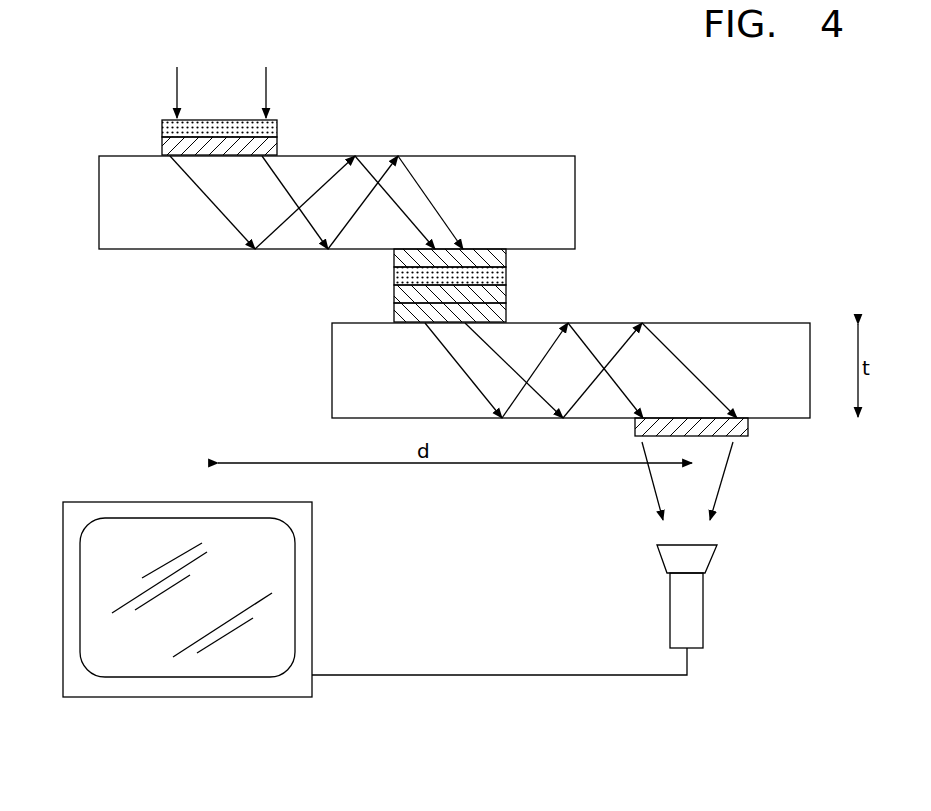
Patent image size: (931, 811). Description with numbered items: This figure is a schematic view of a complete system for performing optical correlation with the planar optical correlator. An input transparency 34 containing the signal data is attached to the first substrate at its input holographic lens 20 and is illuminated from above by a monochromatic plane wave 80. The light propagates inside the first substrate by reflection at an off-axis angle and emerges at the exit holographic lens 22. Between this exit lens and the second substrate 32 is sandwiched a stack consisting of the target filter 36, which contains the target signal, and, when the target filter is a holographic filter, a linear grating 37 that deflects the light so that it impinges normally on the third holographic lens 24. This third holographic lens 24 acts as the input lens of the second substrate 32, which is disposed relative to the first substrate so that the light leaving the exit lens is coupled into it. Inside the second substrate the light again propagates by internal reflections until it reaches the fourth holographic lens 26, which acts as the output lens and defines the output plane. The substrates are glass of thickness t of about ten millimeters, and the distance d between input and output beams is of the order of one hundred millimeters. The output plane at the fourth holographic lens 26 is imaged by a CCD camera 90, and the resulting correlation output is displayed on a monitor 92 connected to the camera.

The monochromatic plane wave 80 is at (264, 82).
The input transparency 34 is at (277, 127).
The input holographic lens 20 is at (270, 147).
The exit holographic lens 22 is at (500, 260).
The linear grating 37 is at (500, 295).
The target filter 36 is at (394, 275).
The third holographic lens 24 is at (500, 312).
The second substrate 32 is at (382, 389).
The fourth holographic lens 26 is at (745, 426).
The CCD camera 90 is at (700, 607).
The monitor 92 is at (303, 575).